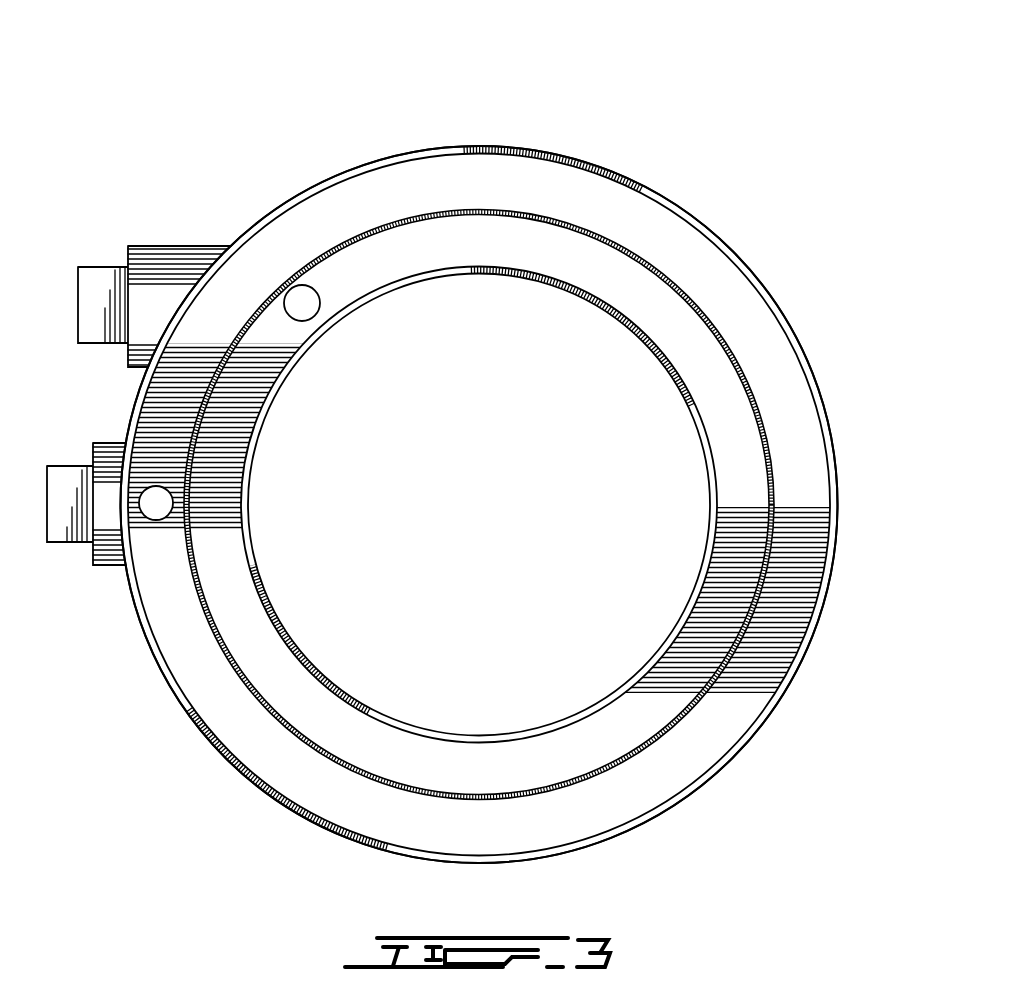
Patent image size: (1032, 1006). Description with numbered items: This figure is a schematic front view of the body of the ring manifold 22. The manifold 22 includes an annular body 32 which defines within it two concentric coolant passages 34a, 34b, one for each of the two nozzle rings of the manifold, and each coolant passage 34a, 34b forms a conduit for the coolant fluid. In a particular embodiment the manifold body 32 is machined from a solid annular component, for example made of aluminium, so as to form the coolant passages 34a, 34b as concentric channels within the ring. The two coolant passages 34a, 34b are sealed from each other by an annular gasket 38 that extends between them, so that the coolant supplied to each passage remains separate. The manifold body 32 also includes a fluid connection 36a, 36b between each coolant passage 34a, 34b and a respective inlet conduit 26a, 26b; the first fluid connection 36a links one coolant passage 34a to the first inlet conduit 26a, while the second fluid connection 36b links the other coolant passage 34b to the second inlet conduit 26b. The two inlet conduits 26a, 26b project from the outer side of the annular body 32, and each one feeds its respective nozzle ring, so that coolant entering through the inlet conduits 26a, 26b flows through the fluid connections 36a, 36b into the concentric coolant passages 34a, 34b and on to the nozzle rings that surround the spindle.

The ring manifold 22 is at (586, 146).
The annular body 32 is at (665, 197).
The annular gasket 38 is at (410, 213).
The coolant passage 34a is at (670, 318).
The coolant passage 34b is at (763, 382).
The inlet conduit 26a is at (150, 267).
The inlet conduit 26b is at (113, 556).
The fluid connection 36a is at (302, 302).
The fluid connection 36b is at (157, 502).